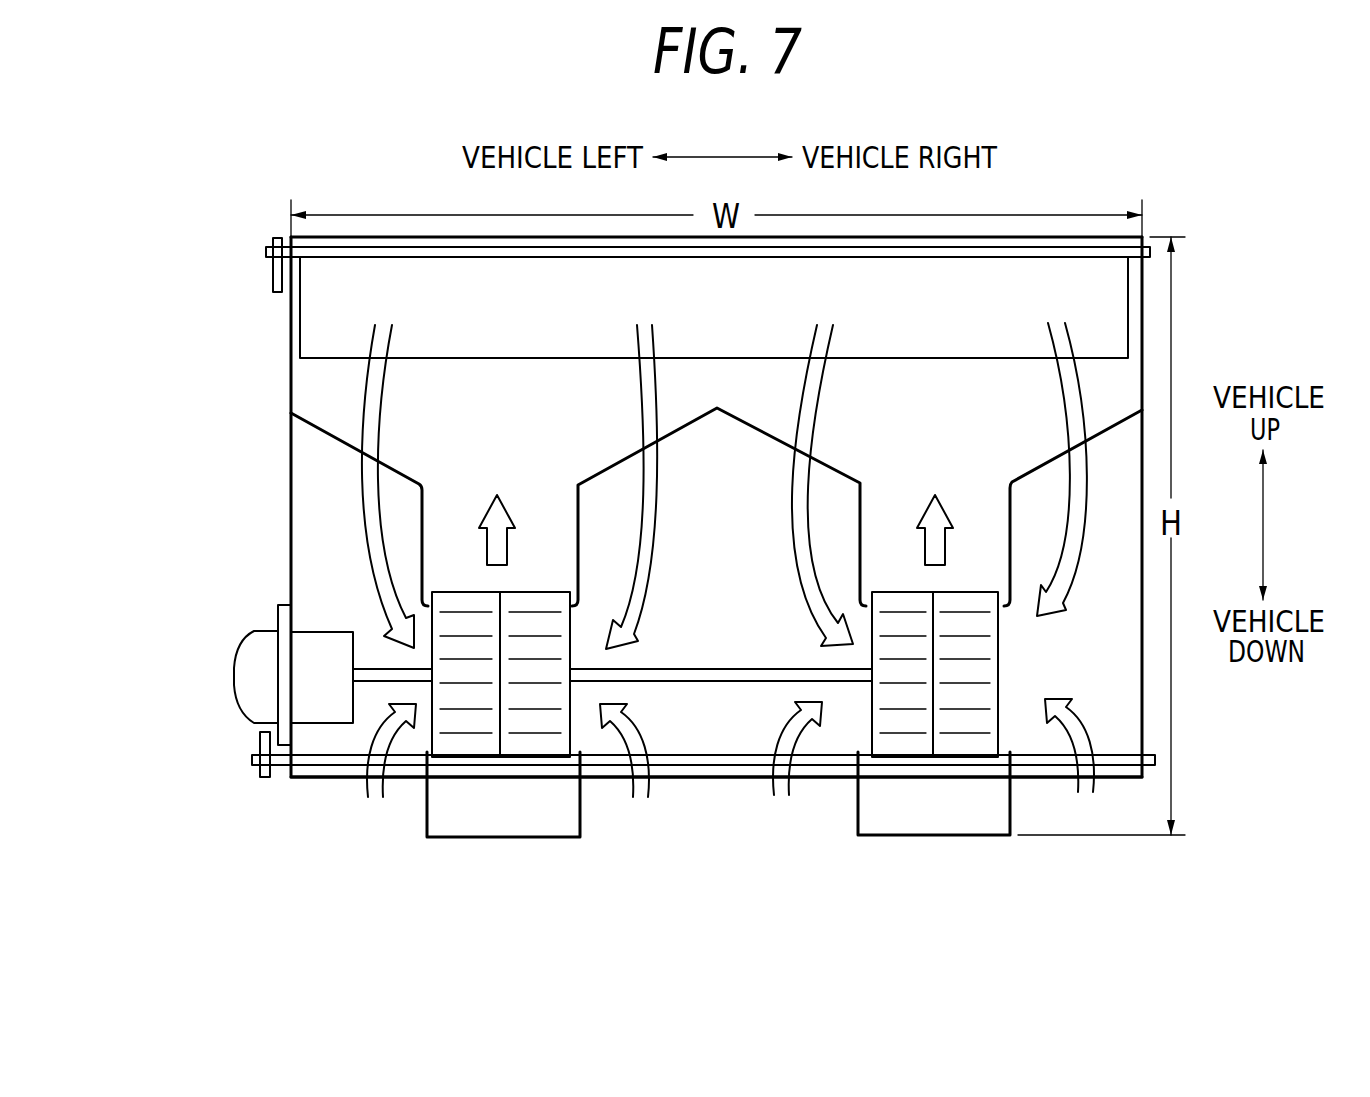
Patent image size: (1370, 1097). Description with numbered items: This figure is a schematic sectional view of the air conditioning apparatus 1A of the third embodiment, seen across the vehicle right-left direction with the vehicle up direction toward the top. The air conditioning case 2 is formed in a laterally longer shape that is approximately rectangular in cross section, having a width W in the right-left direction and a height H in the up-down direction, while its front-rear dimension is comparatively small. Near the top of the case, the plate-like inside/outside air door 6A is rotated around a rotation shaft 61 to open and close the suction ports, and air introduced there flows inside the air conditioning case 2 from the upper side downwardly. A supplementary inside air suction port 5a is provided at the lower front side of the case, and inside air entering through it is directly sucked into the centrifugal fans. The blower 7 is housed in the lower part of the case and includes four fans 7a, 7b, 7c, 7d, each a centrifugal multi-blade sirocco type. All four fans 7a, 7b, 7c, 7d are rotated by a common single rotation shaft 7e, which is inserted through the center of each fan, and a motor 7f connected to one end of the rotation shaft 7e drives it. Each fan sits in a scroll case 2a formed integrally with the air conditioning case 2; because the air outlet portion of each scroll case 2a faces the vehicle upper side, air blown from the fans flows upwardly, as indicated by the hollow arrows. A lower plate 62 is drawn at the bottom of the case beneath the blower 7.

The air conditioning apparatus 1A is at (279, 411).
The air conditioning case 2 is at (289, 445).
The scroll case 2a is at (500, 838).
The supplementary inside air suction port 5a is at (340, 780).
The rotation shaft 61 is at (347, 253).
The inside/outside air door 6A is at (328, 358).
The lower plate 62 is at (707, 762).
The blower 7 is at (244, 729).
The fan 7a is at (467, 605).
The fan 7b is at (525, 602).
The fan 7c is at (882, 708).
The fan 7d is at (968, 730).
The rotation shaft 7e is at (390, 665).
The motor 7f is at (255, 663).